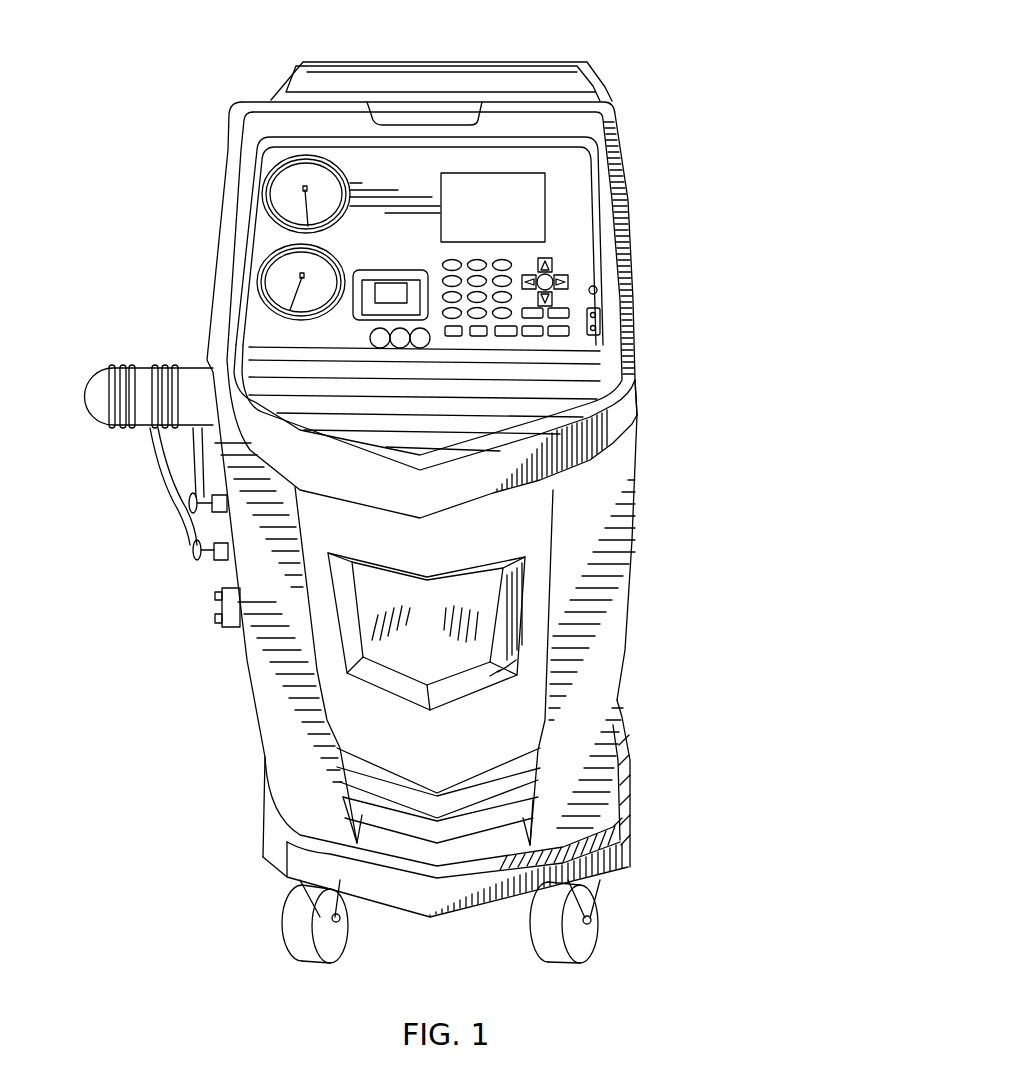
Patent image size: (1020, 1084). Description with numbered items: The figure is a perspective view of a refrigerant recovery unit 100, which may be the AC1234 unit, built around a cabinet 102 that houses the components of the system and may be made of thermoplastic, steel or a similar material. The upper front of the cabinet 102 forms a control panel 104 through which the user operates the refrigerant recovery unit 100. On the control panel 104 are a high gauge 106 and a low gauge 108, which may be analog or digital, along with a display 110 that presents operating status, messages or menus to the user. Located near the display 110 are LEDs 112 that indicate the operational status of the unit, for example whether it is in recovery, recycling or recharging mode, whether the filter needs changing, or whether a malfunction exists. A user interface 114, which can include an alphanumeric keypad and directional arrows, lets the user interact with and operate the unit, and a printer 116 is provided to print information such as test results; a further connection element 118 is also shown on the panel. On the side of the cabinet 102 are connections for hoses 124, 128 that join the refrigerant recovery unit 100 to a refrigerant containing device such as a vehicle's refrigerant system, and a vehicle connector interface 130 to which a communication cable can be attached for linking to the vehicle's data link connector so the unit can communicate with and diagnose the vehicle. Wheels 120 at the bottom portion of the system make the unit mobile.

The refrigerant recovery unit 100 is at (628, 605).
The cabinet 102 is at (635, 497).
The control panel 104 is at (452, 320).
The high gauge 106 is at (283, 193).
The low gauge 108 is at (283, 270).
The display 110 is at (548, 205).
The LEDs 112 is at (411, 107).
The user interface 114 is at (477, 318).
The printer 116 is at (353, 312).
The connection port 118 is at (593, 318).
The wheels 120 is at (598, 912).
The hose 124 is at (185, 499).
The hose 128 is at (190, 550).
The vehicle connector interface 130 is at (223, 597).